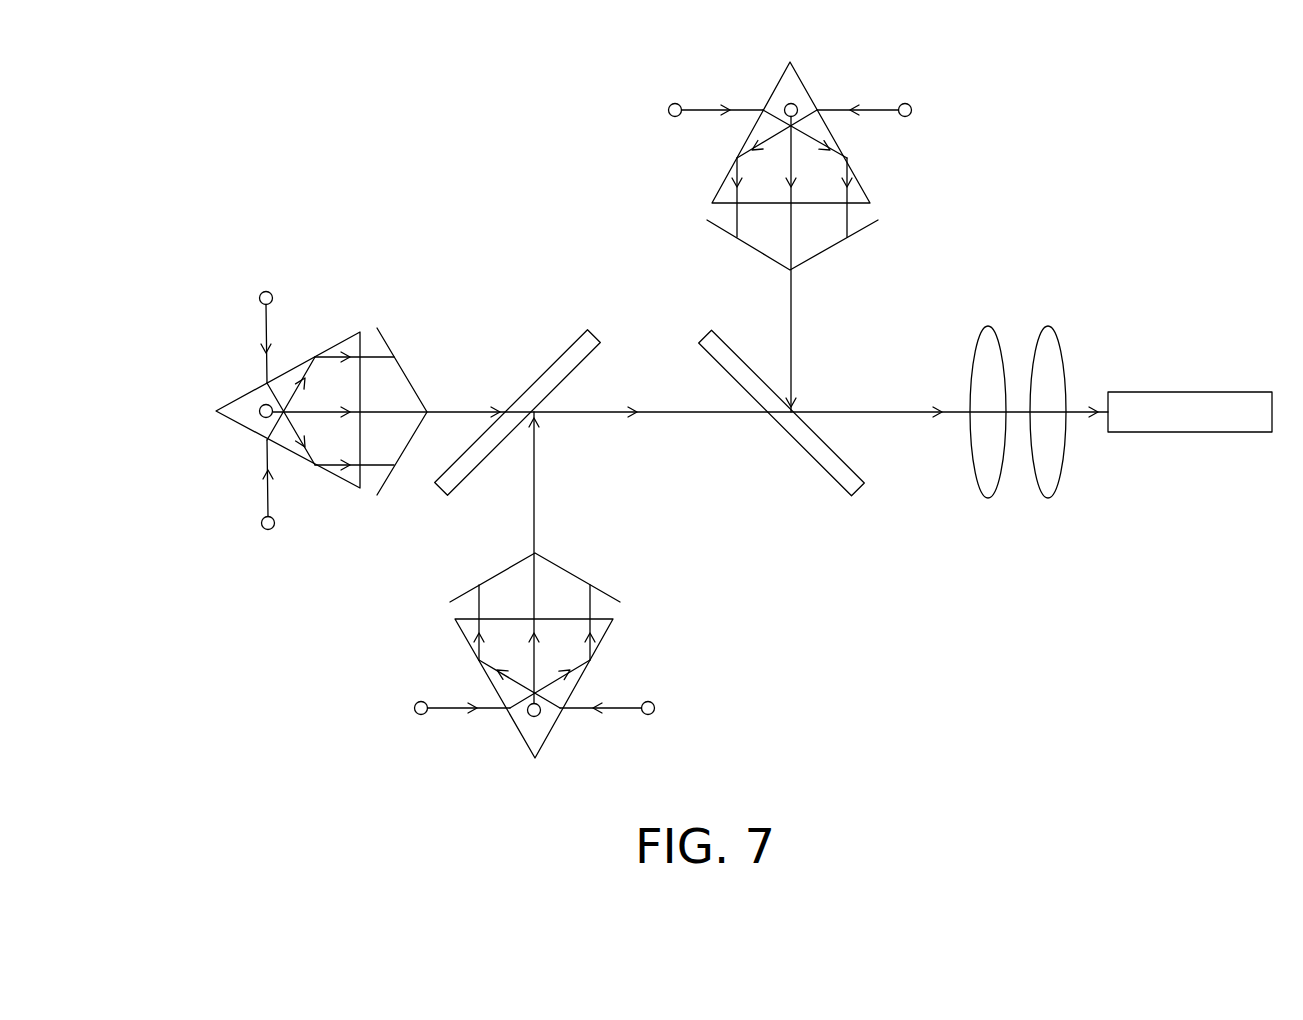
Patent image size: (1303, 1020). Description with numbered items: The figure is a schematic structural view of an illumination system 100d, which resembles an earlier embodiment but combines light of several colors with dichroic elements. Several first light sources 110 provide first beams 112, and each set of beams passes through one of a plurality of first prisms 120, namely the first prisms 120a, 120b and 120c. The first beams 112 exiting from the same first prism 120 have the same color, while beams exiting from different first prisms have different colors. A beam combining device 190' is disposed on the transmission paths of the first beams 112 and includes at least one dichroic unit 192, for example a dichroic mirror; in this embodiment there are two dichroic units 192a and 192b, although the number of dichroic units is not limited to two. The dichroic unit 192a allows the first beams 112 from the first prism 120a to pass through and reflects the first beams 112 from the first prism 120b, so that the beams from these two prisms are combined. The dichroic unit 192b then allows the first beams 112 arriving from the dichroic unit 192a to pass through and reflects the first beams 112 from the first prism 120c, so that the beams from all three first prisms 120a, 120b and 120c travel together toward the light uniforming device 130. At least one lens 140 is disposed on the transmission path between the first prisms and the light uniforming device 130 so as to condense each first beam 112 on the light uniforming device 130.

The illumination system 100d is at (1235, 752).
The first light source 110 is at (267, 290).
The first beam 112 is at (363, 467).
The first prism 120 is at (561, 407).
The first prism 120a is at (243, 417).
The first prism 120b is at (540, 732).
The first prism 120c is at (793, 83).
The light uniforming device 130 is at (1180, 418).
The lens 140 is at (1045, 473).
The beam combining device 190' is at (735, 449).
The dichroic unit 192 is at (650, 414).
The dichroic unit 192a is at (542, 385).
The dichroic unit 192b is at (802, 435).